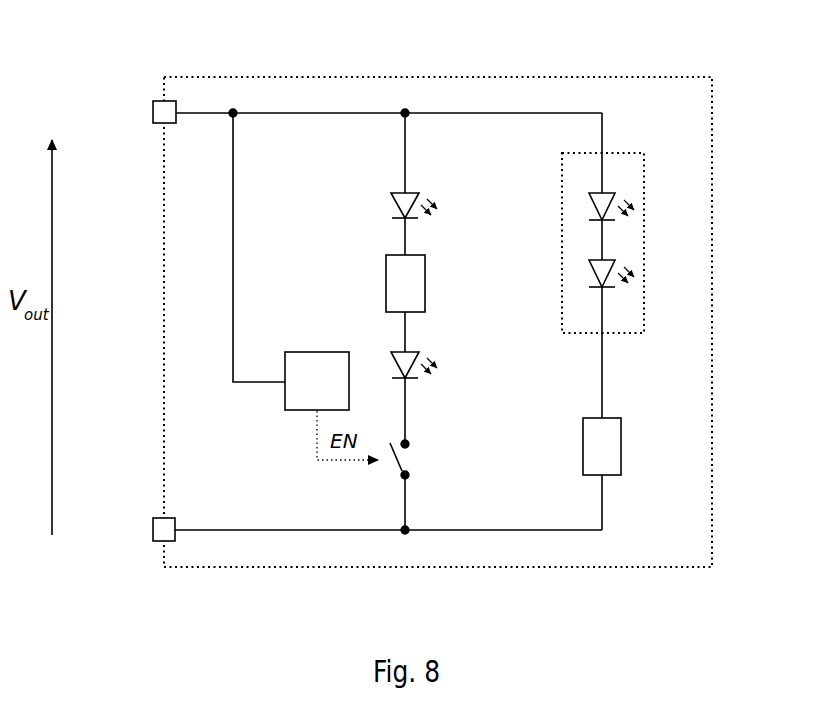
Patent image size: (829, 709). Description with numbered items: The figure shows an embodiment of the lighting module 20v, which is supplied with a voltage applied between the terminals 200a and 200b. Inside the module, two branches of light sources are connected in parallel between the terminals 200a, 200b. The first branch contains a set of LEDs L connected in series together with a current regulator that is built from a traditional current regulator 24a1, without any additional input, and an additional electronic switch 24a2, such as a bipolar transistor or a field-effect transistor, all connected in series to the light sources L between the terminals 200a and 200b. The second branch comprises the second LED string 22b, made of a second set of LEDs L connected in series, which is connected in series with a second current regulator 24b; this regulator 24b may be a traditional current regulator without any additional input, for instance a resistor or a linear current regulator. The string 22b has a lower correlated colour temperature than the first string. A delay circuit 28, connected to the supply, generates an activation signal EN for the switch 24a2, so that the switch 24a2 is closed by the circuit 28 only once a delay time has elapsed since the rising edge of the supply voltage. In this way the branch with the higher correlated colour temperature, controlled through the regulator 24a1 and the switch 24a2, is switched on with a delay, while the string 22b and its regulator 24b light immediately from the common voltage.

The lighting module 20v is at (590, 72).
The terminal 200a is at (157, 97).
The terminal 200b is at (157, 547).
The LED L is at (430, 179).
The traditional current regulator 24a1 is at (416, 313).
The electronic switch 24a2 is at (413, 465).
The delay circuit 28 is at (322, 348).
The second LED string 22b is at (617, 340).
The second current regulator 24b is at (607, 470).